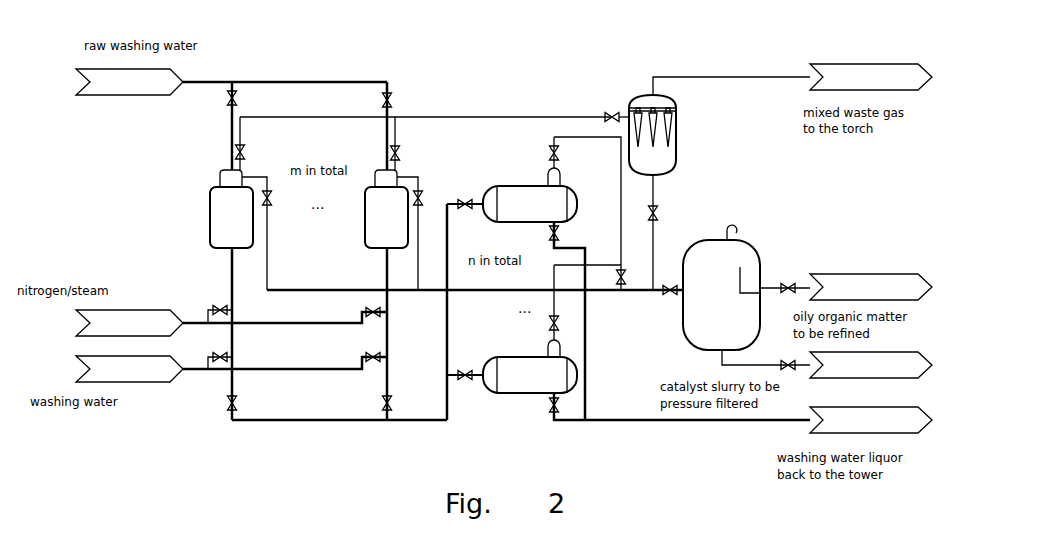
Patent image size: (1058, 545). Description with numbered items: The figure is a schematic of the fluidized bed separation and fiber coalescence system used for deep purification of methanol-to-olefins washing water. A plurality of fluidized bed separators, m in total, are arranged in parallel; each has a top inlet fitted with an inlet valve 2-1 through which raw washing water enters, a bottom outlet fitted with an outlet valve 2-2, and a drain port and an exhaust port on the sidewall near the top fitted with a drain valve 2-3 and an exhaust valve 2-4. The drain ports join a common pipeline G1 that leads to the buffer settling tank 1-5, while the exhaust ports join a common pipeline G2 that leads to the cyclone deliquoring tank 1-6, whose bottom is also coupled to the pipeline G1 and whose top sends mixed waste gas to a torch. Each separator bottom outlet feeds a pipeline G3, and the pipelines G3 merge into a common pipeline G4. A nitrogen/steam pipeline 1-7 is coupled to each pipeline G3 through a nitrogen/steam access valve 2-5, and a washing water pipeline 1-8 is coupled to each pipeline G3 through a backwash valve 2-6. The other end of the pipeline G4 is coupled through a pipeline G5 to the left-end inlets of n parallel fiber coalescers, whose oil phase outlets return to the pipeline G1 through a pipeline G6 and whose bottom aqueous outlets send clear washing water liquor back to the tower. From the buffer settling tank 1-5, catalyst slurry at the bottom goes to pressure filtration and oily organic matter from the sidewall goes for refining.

The buffer settling tank 1-5 is at (733, 263).
The cyclone deliquoring tank 1-6 is at (665, 157).
The nitrogen/steam pipeline 1-7 is at (190, 322).
The washing water pipeline 1-8 is at (195, 370).
The inlet valve 2-1 is at (227, 99).
The outlet valve 2-2 is at (227, 404).
The drain valve 2-3 is at (273, 199).
The exhaust valve 2-4 is at (245, 152).
The nitrogen/steam access valve 2-5 is at (215, 309).
The backwash valve 2-6 is at (215, 357).
The pipeline G1 is at (475, 285).
The pipeline G2 is at (426, 137).
The pipeline G3 is at (302, 334).
The pipeline G4 is at (339, 428).
The pipeline G5 is at (465, 384).
The pipeline G6 is at (590, 213).